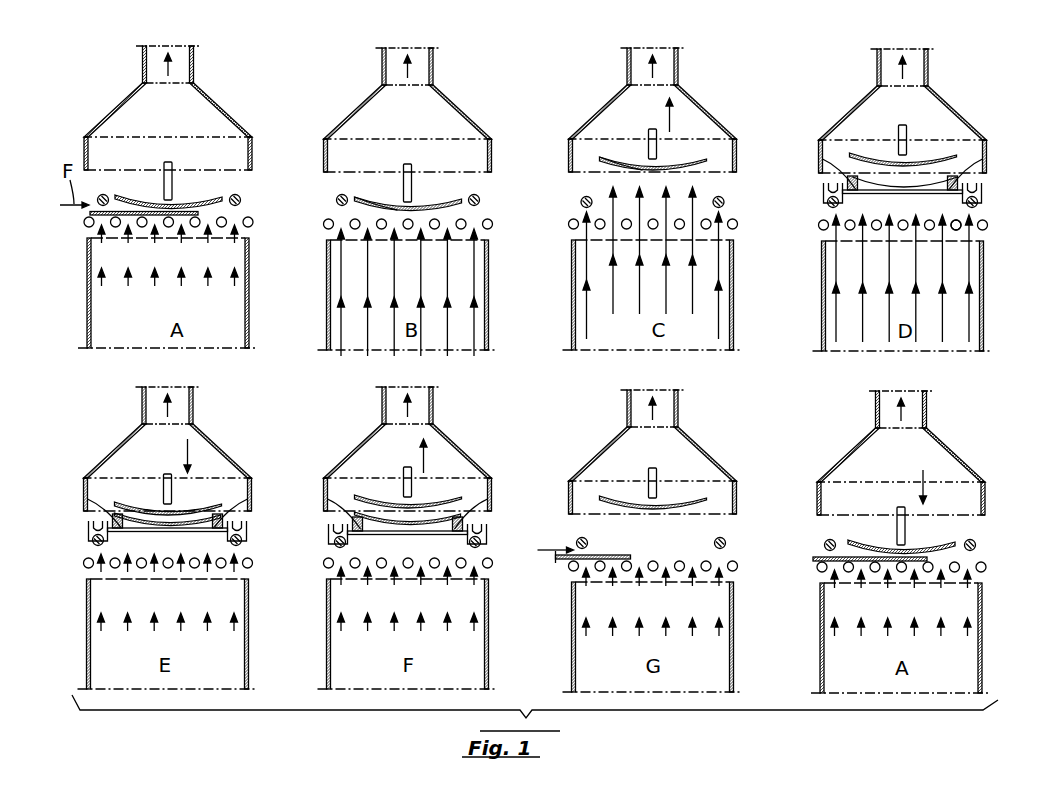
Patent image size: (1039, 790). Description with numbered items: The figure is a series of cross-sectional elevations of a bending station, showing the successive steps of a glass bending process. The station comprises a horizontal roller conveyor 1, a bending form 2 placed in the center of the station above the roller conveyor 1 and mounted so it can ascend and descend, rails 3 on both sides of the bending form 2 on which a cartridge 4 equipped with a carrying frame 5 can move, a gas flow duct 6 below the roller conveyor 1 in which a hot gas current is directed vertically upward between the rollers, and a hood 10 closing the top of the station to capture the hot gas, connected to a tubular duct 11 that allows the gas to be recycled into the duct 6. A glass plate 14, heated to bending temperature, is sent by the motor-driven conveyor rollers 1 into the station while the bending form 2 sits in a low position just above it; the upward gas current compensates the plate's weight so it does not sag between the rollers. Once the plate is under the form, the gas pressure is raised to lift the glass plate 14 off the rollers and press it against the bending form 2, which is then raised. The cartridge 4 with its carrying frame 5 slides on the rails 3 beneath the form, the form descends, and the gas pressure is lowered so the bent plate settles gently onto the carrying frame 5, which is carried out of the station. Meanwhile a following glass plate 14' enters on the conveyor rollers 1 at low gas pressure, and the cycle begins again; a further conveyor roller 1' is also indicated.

The roller conveyor 1 is at (534, 412).
The conveyor roller 1' is at (988, 243).
The bending form 2 is at (536, 331).
The rails 3 is at (538, 347).
The cartridge 4 is at (457, 336).
The carrying frame 5 is at (614, 336).
The gas flow duct 6 is at (519, 465).
The hood 10 is at (541, 295).
The tubular duct 11 is at (558, 236).
The glass plate 14 is at (524, 317).
The following glass plate 14' is at (742, 528).